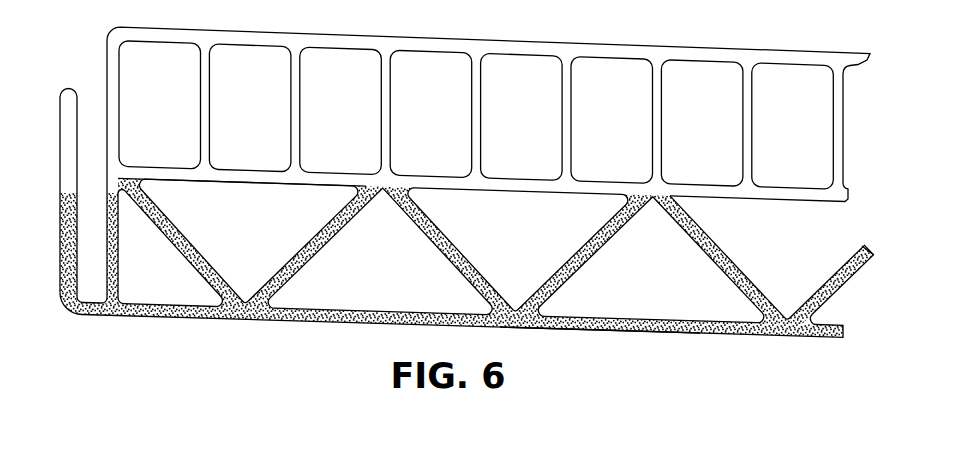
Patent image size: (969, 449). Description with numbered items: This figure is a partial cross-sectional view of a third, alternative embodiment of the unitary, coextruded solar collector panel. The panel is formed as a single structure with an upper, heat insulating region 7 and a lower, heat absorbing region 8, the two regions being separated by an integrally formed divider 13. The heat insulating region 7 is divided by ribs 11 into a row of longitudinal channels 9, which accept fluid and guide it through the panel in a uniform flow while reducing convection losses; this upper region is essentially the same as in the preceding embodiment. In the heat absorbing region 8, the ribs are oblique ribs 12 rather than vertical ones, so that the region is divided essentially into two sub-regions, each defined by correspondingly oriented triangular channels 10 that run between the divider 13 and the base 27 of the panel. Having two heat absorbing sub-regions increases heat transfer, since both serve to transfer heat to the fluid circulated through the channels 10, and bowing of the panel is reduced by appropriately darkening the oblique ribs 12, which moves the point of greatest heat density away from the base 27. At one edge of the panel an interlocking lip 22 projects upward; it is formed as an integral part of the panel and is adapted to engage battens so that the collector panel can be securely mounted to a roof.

The heat insulating region 7 is at (872, 126).
The heat absorbing region 8 is at (882, 255).
The channels 9 is at (152, 48).
The channels 10 is at (177, 288).
The ribs 11 is at (200, 121).
The oblique ribs 12 is at (212, 268).
The divider 13 is at (298, 187).
The interlocking lip 22 is at (66, 170).
The base 27 is at (587, 328).